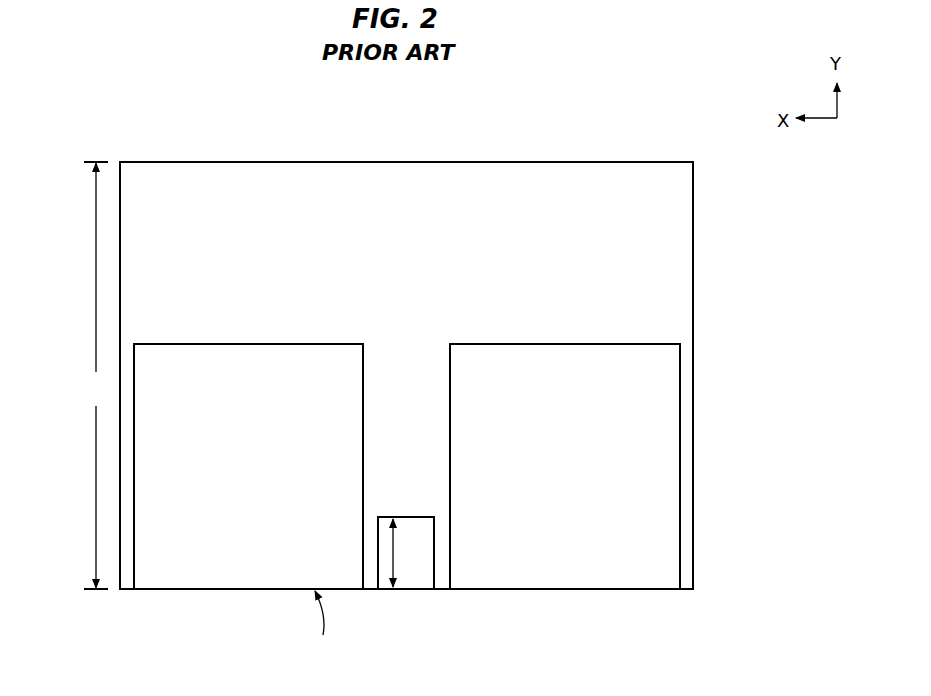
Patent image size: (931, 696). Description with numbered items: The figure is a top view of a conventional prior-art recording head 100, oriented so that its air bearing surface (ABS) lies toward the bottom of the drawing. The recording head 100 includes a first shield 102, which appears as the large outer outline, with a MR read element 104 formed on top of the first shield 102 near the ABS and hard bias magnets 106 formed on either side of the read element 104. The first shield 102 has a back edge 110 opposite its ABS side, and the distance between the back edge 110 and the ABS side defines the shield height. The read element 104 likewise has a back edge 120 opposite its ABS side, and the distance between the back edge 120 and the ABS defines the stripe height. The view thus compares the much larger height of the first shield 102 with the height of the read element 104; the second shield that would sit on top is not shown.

The recording head 100 is at (675, 64).
The first shield 102 is at (583, 172).
The MR read element 104 is at (422, 580).
The hard bias magnets 106 is at (266, 404).
The back edge of first shield 110 is at (410, 160).
The back edge of read element 120 is at (403, 516).